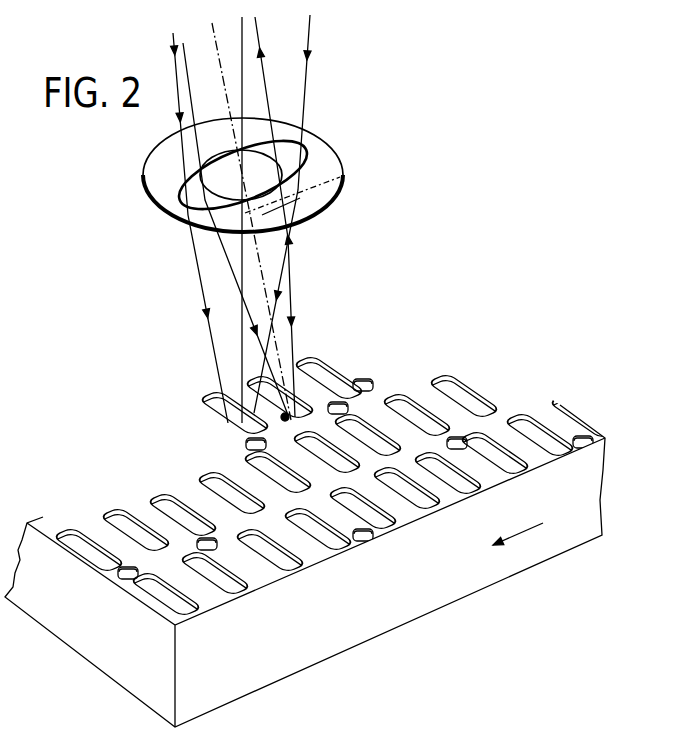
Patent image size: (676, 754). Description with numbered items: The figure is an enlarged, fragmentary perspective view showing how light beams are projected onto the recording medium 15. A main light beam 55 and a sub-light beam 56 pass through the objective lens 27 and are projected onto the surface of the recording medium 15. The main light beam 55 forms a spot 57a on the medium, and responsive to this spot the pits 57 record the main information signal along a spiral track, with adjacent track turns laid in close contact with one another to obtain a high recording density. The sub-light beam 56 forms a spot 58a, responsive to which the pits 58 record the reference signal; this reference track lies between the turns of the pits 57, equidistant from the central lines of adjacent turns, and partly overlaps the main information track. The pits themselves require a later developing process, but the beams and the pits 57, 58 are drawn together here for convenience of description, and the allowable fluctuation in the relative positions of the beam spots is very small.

The recording medium 15 is at (82, 648).
The objective lens 27 is at (332, 158).
The main light beam 55 is at (309, 88).
The sub-light beam 56 is at (271, 88).
The pits 57 is at (220, 398).
The spot of the main light beam 57a is at (228, 430).
The pits 58 is at (333, 410).
The spot of the sub-light beam 58a is at (250, 436).